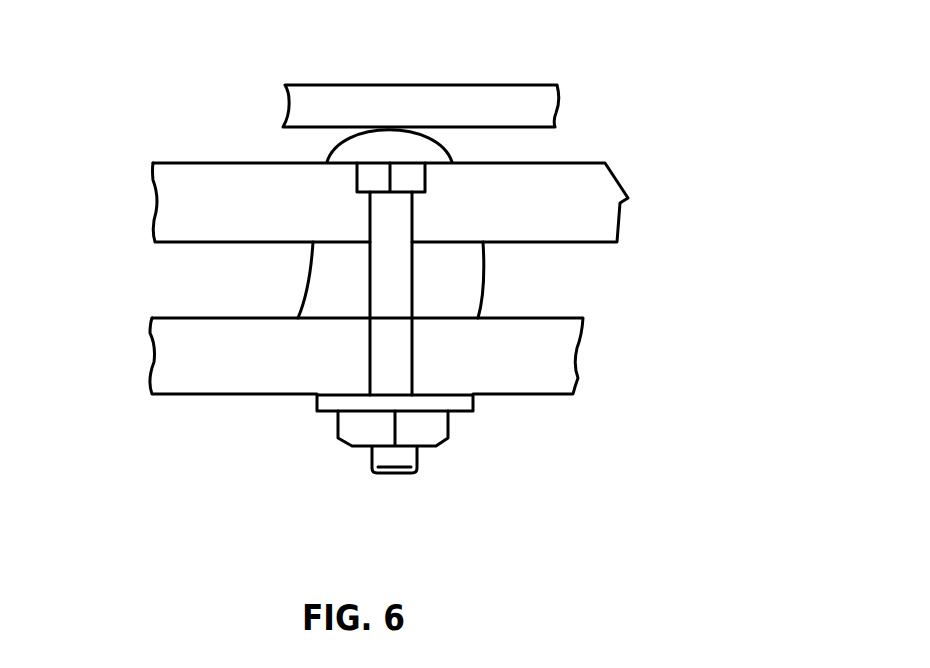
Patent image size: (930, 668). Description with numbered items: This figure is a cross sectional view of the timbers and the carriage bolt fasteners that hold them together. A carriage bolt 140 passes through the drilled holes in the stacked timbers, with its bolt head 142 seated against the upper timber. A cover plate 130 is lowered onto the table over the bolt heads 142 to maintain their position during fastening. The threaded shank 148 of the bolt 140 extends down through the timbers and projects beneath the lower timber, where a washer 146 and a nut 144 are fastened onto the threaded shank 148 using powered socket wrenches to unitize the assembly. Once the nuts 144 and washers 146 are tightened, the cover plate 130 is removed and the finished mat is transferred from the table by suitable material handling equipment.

The cover plate 130 is at (485, 73).
The carriage bolt 140 is at (324, 179).
The bolt head 142 is at (512, 138).
The nut 144 is at (456, 479).
The washer 146 is at (468, 424).
The threaded shank 148 is at (552, 293).